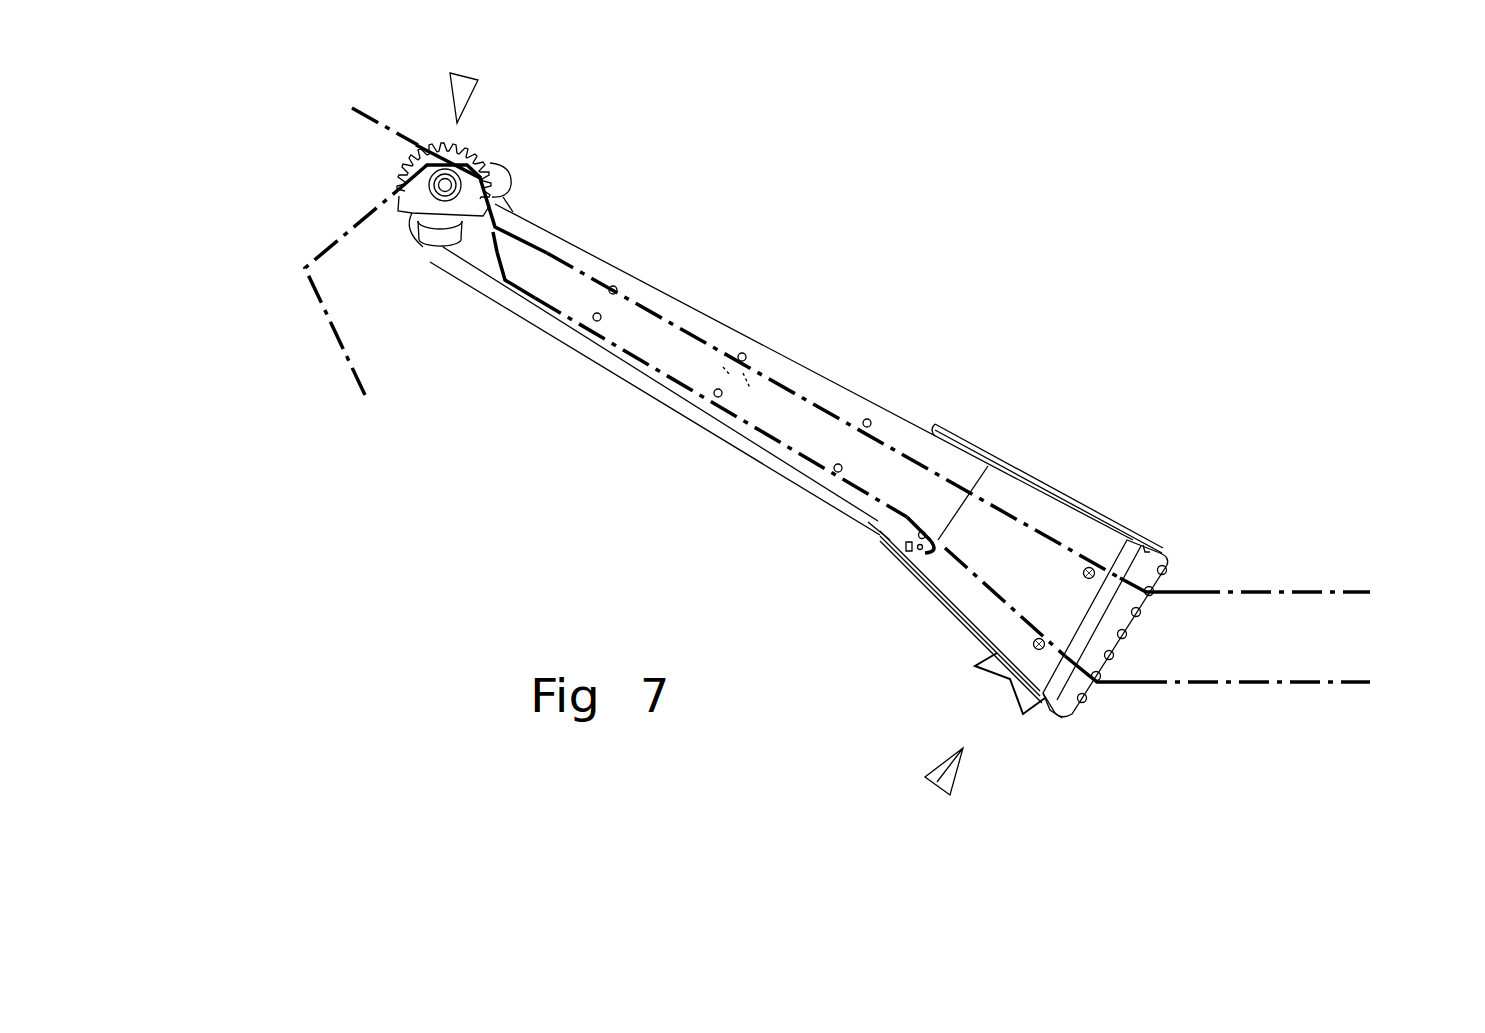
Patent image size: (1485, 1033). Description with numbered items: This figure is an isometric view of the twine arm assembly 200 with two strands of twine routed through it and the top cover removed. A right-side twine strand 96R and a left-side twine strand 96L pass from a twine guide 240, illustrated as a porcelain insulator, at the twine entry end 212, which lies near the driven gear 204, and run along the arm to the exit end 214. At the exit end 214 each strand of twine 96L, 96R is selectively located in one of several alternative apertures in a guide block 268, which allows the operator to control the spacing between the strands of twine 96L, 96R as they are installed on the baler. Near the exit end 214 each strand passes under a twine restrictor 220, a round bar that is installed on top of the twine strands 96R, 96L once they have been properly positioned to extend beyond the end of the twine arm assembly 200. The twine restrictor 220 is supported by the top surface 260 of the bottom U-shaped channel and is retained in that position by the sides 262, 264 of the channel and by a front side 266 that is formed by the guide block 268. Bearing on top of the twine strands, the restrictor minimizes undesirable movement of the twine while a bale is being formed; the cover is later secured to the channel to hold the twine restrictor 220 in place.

The right-side twine strand 96R is at (355, 125).
The left-side twine strand 96L is at (353, 378).
The twine arm assembly 200 is at (1282, 783).
The driven gear 204 is at (395, 165).
The twine entry end 212 is at (477, 80).
The exit end 214 is at (937, 782).
The twine restrictor 220 is at (1133, 547).
The twine guide 240 is at (506, 196).
The top surface 260 is at (1071, 592).
The side 262 is at (1127, 525).
The side 264 is at (995, 651).
The front side 266 is at (1057, 716).
The guide block 268 is at (1123, 630).